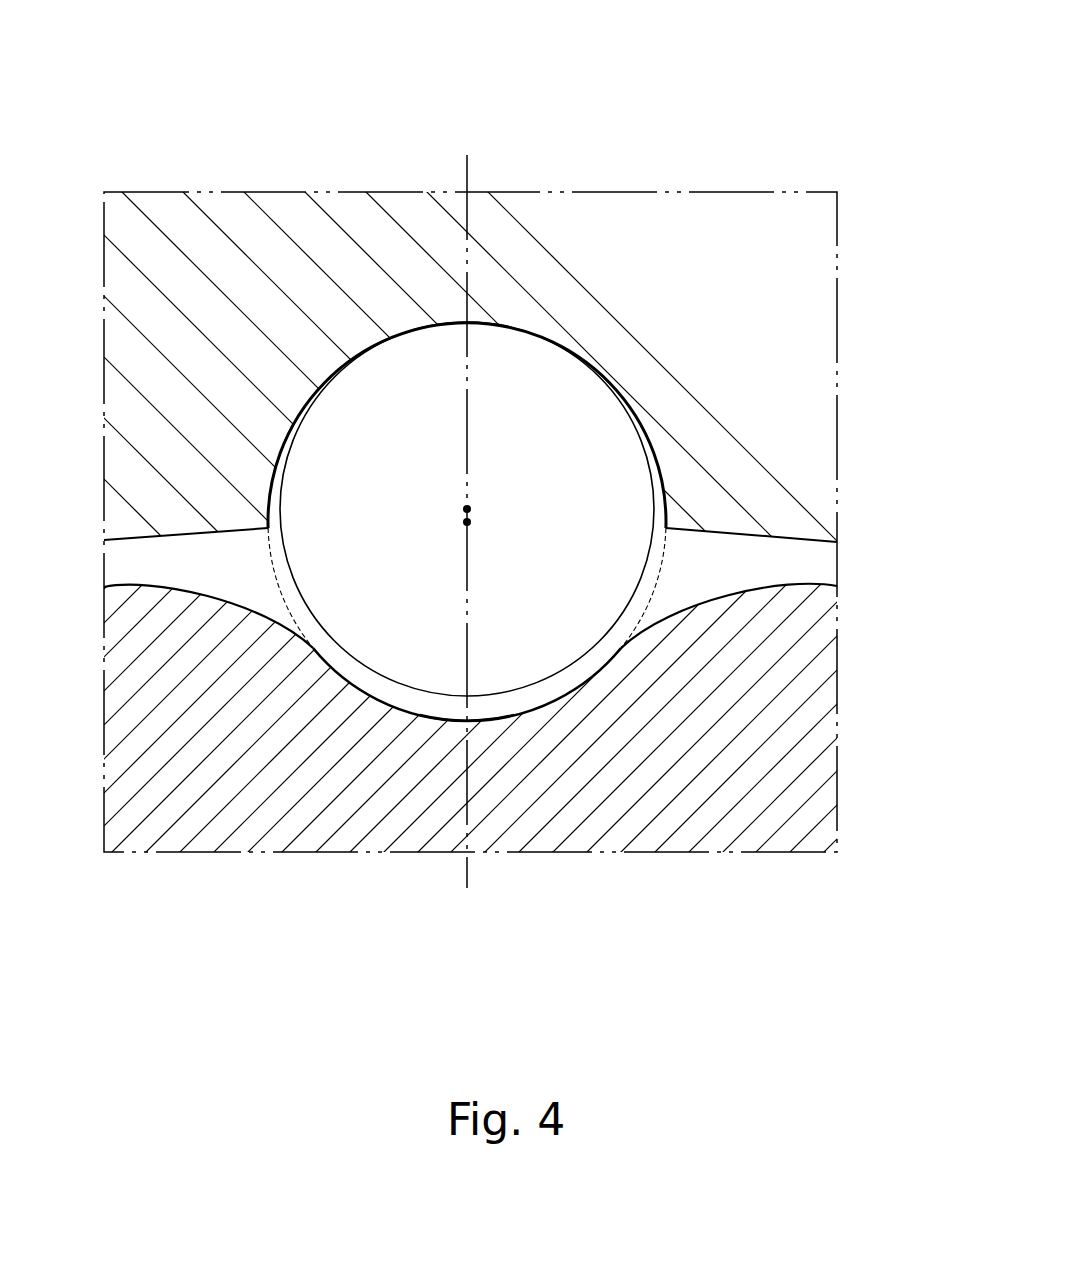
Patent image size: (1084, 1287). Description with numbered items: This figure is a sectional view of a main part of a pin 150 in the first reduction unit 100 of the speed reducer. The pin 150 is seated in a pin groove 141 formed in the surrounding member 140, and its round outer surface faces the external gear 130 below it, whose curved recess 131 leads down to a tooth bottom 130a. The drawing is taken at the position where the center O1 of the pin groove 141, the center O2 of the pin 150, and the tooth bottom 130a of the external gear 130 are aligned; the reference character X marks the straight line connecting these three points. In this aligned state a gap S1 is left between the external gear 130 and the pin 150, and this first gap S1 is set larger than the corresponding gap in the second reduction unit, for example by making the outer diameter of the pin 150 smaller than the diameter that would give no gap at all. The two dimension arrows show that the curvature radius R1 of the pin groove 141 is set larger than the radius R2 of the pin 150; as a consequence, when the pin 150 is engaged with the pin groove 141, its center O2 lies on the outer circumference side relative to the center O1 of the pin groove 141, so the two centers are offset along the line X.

The first reduction unit 100 is at (742, 170).
The external gear 130 is at (585, 762).
The tooth bottom 130a is at (476, 715).
The recess of lower body 131 is at (435, 716).
The upper body 140 is at (495, 302).
The pin groove 141 is at (322, 407).
The pin 150 is at (645, 432).
The gap S1 is at (458, 705).
The curvature radius of the pin groove R1 is at (660, 483).
The radius of the pin R2 is at (608, 396).
The center of the pin groove O1 is at (467, 522).
The center of the pin O2 is at (467, 509).
The straight line X is at (467, 873).